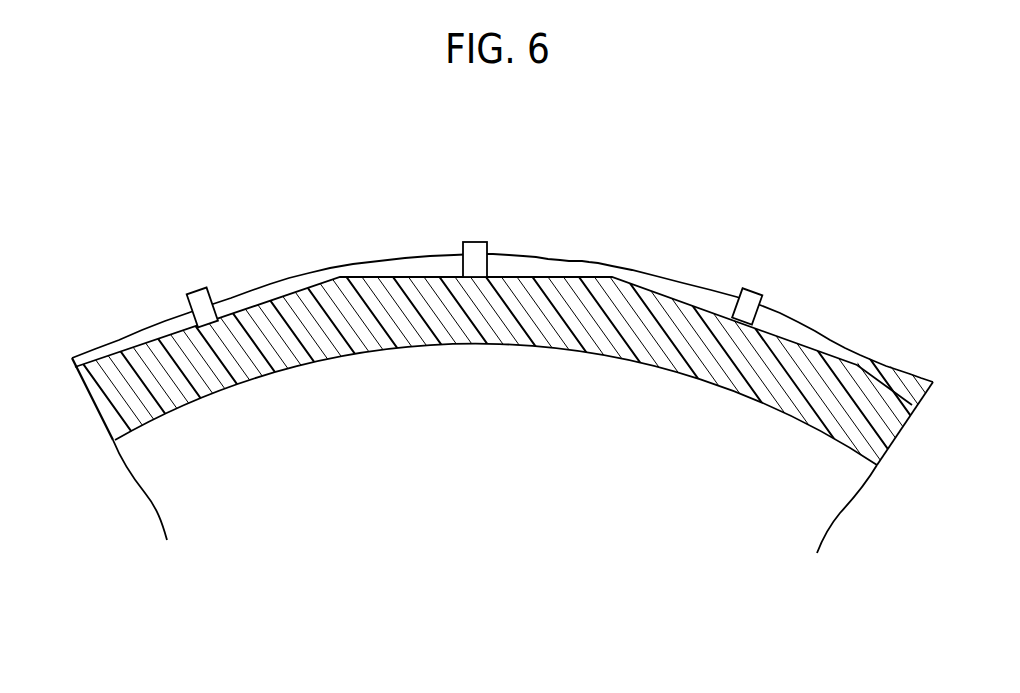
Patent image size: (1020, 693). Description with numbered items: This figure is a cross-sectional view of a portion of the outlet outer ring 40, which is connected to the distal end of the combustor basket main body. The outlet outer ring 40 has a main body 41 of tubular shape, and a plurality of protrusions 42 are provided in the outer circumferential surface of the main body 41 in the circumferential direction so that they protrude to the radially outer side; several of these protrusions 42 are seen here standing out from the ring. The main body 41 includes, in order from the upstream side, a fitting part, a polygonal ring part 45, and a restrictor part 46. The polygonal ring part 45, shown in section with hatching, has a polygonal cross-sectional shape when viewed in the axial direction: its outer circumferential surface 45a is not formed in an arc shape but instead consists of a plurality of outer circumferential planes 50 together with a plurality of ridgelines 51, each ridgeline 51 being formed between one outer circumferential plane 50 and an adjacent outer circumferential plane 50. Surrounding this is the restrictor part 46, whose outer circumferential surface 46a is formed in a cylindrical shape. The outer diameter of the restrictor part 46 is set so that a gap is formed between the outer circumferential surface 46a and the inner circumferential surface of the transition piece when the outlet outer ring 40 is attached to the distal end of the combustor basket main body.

The outlet outer ring 40 is at (283, 200).
The main body 41 is at (402, 333).
The protrusion 42 is at (477, 249).
The polygonal ring part 45 is at (510, 319).
The outer circumferential surface of the polygonal ring part 45a is at (413, 278).
The restrictor part 46 is at (163, 318).
The outer circumferential surface of the restrictor part 46a is at (120, 337).
The outer circumferential plane 50 is at (250, 308).
The ridgeline 51 is at (333, 270).